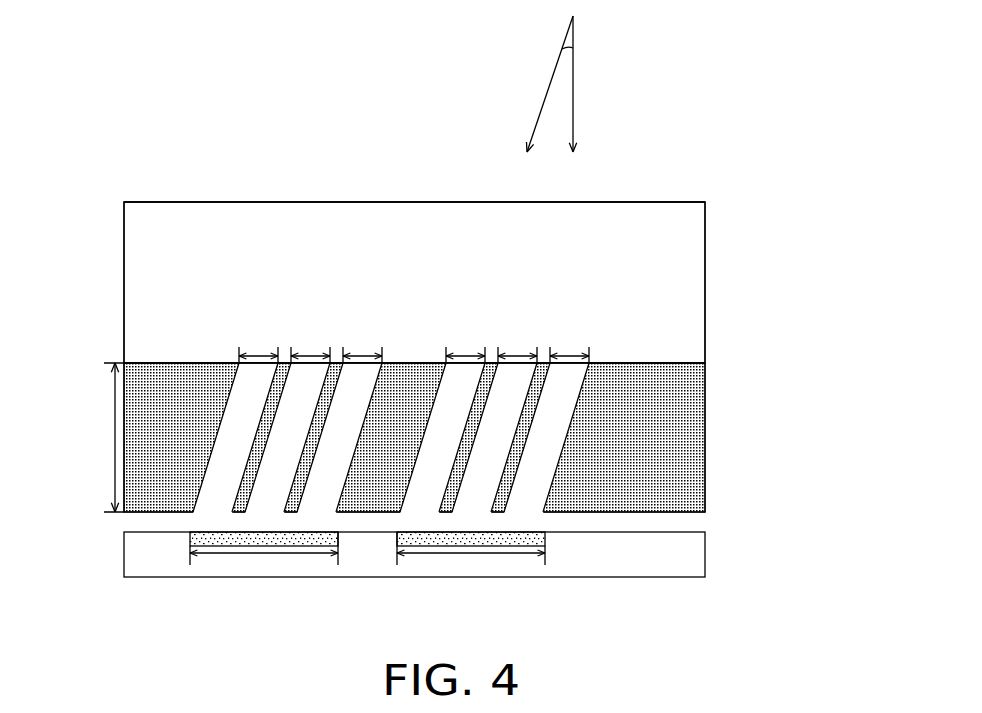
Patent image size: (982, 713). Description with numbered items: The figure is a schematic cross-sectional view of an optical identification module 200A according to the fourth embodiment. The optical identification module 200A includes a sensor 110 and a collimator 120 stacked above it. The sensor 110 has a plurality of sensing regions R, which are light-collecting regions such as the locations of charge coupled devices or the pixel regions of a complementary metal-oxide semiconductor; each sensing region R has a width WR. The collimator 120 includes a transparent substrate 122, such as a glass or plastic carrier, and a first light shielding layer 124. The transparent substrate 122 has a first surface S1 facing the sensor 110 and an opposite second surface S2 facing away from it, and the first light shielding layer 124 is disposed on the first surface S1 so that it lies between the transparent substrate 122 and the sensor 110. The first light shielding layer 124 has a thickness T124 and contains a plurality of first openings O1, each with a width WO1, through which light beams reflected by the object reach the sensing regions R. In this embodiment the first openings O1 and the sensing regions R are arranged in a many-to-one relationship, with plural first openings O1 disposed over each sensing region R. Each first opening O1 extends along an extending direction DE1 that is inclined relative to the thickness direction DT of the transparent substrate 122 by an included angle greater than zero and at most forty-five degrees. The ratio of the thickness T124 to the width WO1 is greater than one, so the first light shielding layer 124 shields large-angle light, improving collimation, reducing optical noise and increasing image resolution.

The optical identification module 200A is at (813, 649).
The sensor 110 is at (700, 558).
The collimator 120 is at (785, 310).
The transparent substrate 122 is at (695, 320).
The first light shielding layer 124 is at (451, 442).
The first openings O1 is at (213, 498).
The width of first opening WO1 is at (414, 342).
The thickness of first light shielding layer T124 is at (90, 437).
The first surface S1 is at (165, 366).
The second surface S2 is at (147, 201).
The width of sensing region WR is at (472, 556).
The sensing regions R is at (395, 539).
The thickness direction DT is at (576, 102).
The extending direction DE1 is at (540, 102).